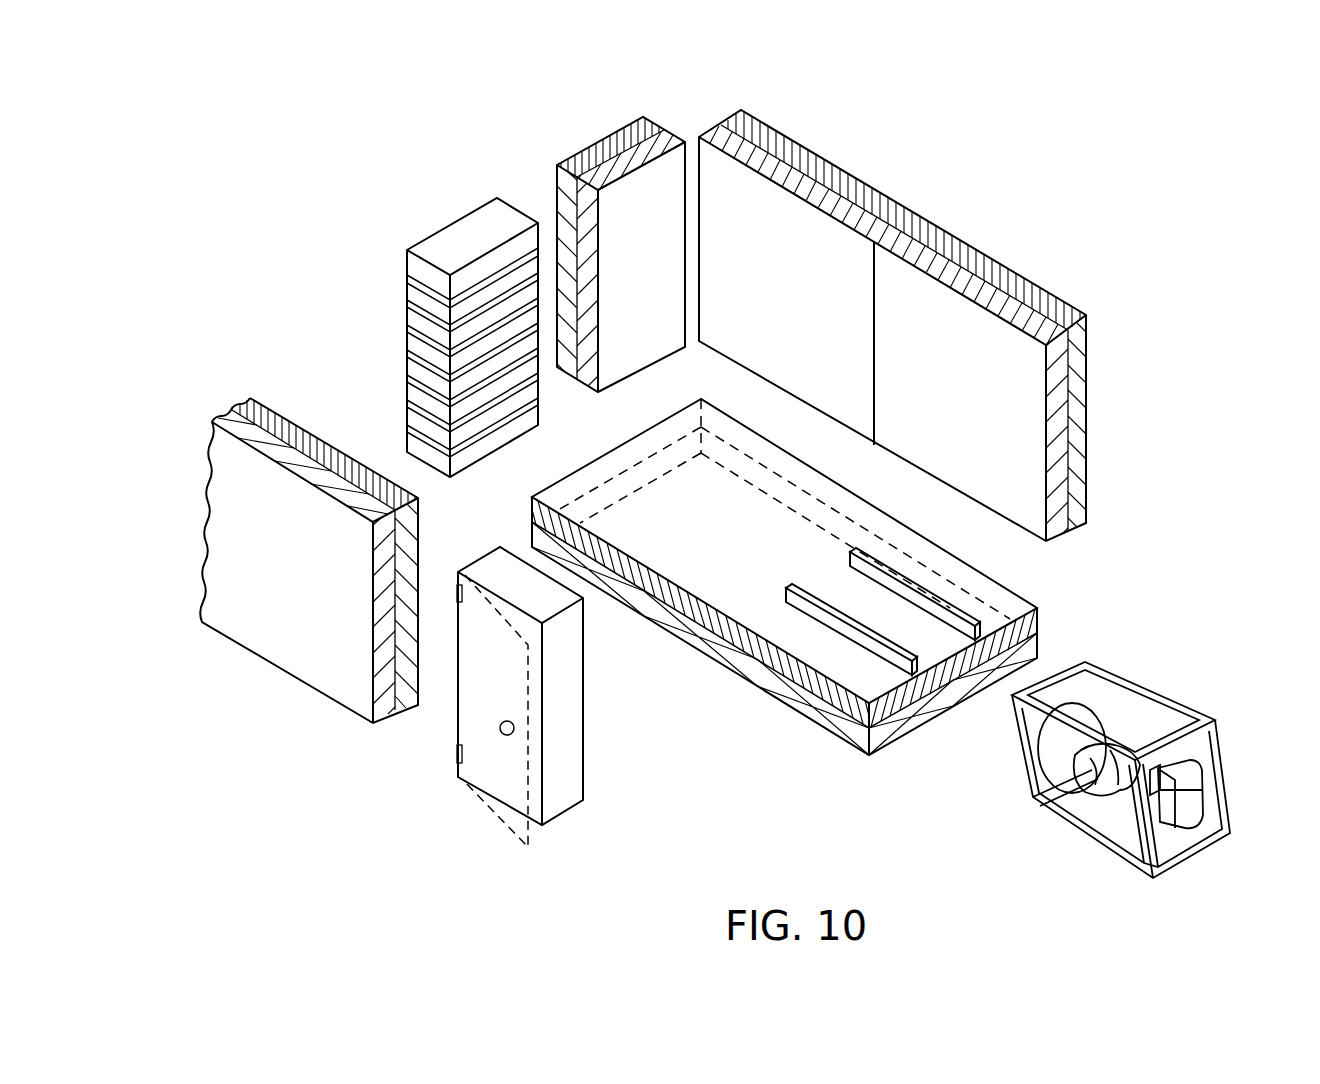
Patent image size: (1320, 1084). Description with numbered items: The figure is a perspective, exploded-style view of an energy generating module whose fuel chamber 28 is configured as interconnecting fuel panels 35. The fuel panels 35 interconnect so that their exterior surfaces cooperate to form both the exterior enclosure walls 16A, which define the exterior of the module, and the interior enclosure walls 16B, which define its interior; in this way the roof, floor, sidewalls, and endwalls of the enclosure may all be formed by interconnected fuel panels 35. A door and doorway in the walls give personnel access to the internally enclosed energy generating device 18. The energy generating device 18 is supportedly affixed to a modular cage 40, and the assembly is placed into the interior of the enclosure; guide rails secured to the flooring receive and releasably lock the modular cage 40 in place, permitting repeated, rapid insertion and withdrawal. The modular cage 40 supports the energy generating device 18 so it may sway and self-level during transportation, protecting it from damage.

The fuel chamber 28 is at (228, 168).
The exterior enclosure walls 16A is at (311, 588).
The interior enclosure walls 16B is at (667, 279).
The fuel panels 35 is at (588, 137).
The energy generating device 18 is at (1128, 720).
The modular cage 40 is at (1222, 777).